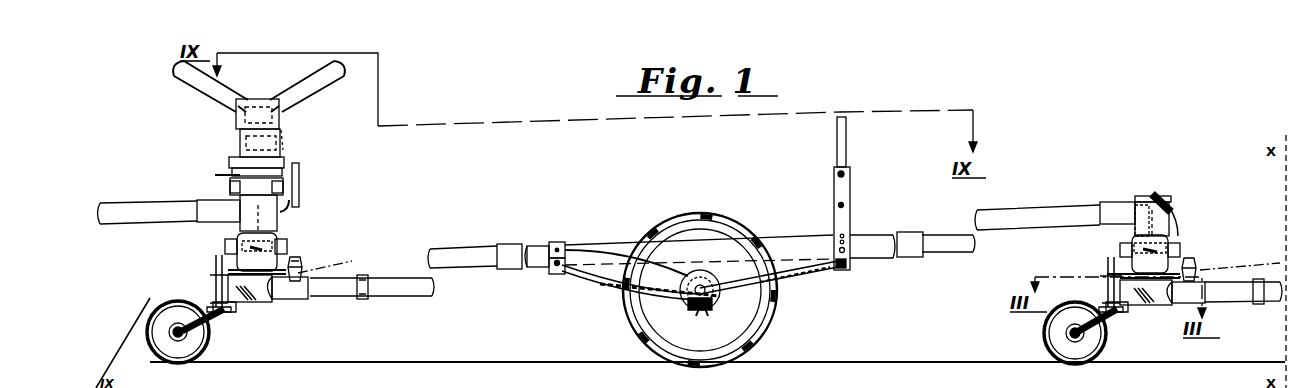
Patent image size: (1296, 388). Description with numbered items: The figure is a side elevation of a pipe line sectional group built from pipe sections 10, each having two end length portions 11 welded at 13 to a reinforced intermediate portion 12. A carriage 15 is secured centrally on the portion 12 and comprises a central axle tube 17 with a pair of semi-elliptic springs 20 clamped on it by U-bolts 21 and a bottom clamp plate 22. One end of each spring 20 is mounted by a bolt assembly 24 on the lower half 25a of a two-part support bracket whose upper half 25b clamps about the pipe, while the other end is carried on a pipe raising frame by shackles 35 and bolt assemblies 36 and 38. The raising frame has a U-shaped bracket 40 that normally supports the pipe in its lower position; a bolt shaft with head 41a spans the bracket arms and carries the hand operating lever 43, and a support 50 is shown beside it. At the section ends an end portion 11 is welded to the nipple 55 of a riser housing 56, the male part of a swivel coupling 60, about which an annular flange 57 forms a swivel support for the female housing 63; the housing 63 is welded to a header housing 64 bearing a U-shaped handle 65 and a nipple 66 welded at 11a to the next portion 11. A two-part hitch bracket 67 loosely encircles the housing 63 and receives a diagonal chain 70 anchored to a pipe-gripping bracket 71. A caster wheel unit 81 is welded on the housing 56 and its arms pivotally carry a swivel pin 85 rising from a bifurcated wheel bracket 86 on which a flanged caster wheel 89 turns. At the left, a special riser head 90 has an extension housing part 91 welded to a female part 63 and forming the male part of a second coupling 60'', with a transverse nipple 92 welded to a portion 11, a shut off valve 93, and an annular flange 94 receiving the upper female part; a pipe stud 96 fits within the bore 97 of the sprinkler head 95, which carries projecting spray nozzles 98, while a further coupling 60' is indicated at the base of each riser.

The pipe section 10 is at (134, 201).
The pipe end length portion 11 is at (152, 222).
The weld metal 11a is at (200, 200).
The intermediate pipe length portion 12 is at (506, 244).
The weld 13 is at (512, 267).
The carriage 15 is at (628, 314).
The central axle tube 17 is at (708, 288).
The semi-elliptic spring 20 is at (797, 286).
The U-bolt 21 is at (690, 311).
The bottom clamp plate 22 is at (704, 311).
The bolt, nut and lock washer assembly 24 is at (567, 256).
The lower bracket half 25a is at (557, 275).
The upper bracket half 25b is at (568, 229).
The U-shaped shackle 35 is at (853, 241).
The bolt and nut assembly 36 is at (843, 271).
The bolt and nut assembly 38 is at (852, 253).
The U-shaped bracket member 40 is at (851, 184).
The bolt head 41a is at (837, 174).
The operating lever 43 is at (836, 135).
The pipe support 50 is at (838, 206).
The nipple 55 is at (304, 304).
The riser housing 56 is at (266, 223).
The horizontal annular flange 57 is at (737, 290).
The coupling 60 is at (701, 247).
The valve 60' is at (764, 249).
The second coupling 60'' is at (231, 137).
The female coupling housing 63 is at (284, 228).
The header housing 64 is at (1170, 224).
The handle 65 is at (1160, 200).
The nipple 66 is at (1122, 203).
The clamping bracket 67 is at (283, 247).
The diagonal chain 70 is at (384, 268).
The pipe section-gripping bracket 71 is at (366, 296).
The caster wheel unit 81 is at (245, 304).
The caster wheel swivel pin 85 is at (214, 261).
The wheel bracket member 86 is at (216, 306).
The caster wheel 89 is at (162, 309).
The special riser head 90 is at (292, 204).
The extension housing part 91 is at (283, 142).
The nipple 92 is at (214, 169).
The shut off and control valve 93 is at (300, 174).
The annular flange 94 is at (285, 162).
The sprinkler head 95 is at (260, 99).
The pipe stud section 96 is at (280, 110).
The bore 97 is at (236, 110).
The spray nozzle 98 is at (176, 72).